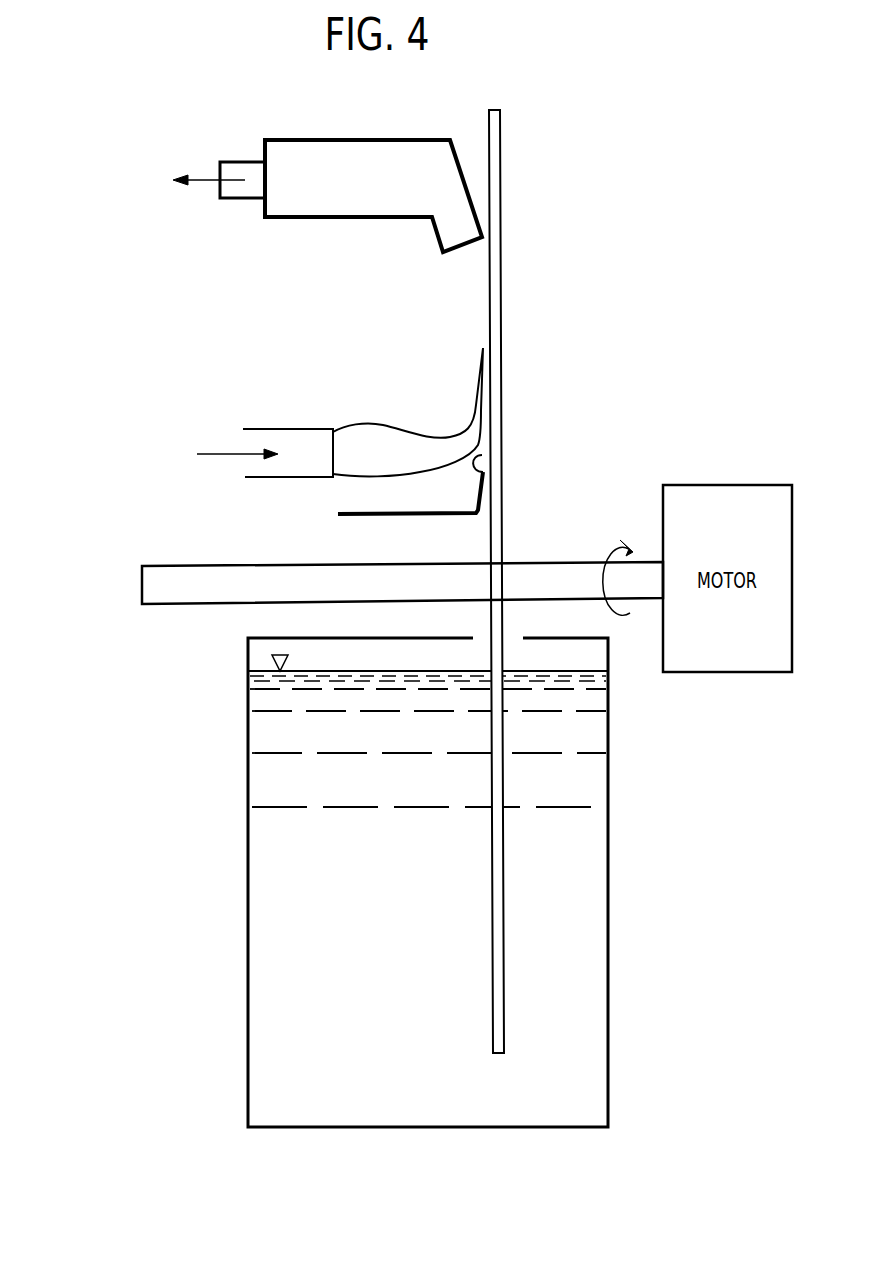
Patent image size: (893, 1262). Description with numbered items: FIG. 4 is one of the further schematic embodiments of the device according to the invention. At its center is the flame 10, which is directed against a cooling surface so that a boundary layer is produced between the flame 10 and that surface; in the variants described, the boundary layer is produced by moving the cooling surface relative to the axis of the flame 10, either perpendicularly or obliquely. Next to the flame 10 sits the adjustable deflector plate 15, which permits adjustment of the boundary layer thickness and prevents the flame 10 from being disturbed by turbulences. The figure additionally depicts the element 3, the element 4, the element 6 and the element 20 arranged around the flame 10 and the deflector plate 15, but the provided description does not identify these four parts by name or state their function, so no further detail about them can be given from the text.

The bar 3 is at (187, 590).
The rod 4 is at (498, 352).
The tank 6 is at (275, 812).
The flame 10 is at (392, 440).
The deflector plate 15 is at (482, 455).
The aerosol gun 20 is at (368, 150).